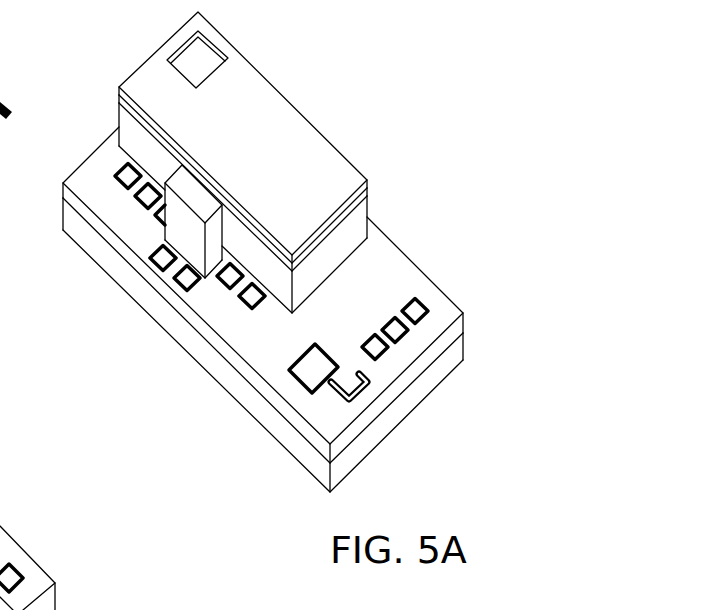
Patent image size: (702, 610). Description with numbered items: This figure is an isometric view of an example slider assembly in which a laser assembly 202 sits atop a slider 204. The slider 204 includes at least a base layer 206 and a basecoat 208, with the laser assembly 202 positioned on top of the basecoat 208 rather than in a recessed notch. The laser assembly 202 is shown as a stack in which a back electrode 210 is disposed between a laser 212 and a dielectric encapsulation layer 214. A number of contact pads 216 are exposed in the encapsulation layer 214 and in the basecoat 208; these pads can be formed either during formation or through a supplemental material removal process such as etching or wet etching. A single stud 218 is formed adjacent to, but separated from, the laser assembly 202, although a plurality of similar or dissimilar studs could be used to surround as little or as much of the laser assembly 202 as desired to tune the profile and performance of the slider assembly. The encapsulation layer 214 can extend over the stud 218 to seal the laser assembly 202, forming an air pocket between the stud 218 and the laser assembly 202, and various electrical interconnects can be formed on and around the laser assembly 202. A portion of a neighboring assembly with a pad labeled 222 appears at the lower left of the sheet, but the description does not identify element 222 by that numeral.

The laser assembly 202 is at (252, 162).
The slider 204 is at (241, 309).
The base layer 206 is at (63, 211).
The basecoat 208 is at (63, 192).
The back electrode 210 is at (368, 192).
The laser 212 is at (118, 117).
The dielectric encapsulation layer 214 is at (368, 188).
The contact pads 216 is at (226, 37).
The stud 218 is at (209, 185).
The contact pad 222 is at (0, 526).